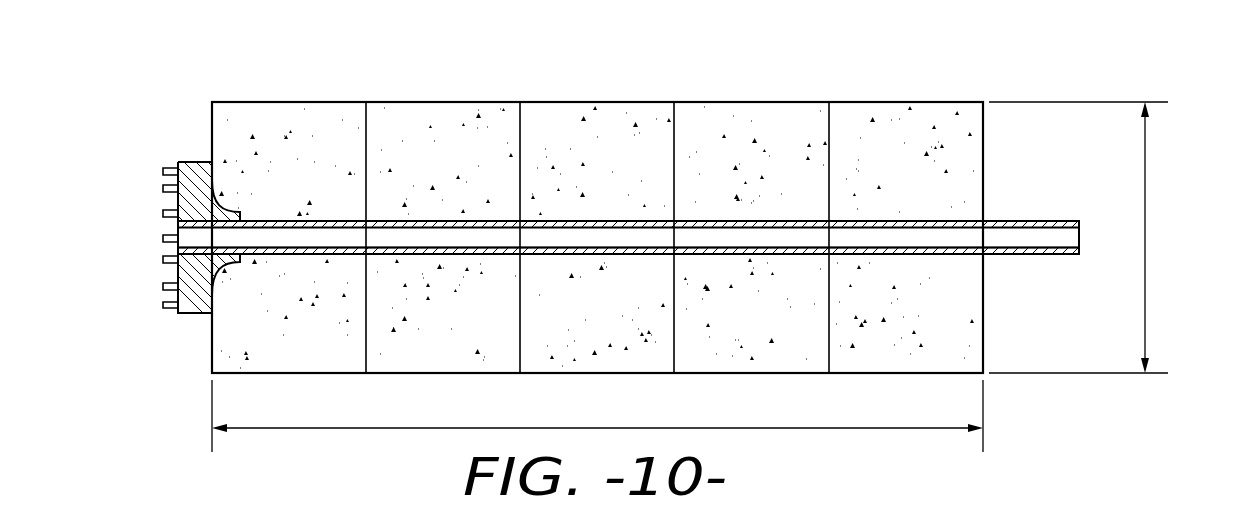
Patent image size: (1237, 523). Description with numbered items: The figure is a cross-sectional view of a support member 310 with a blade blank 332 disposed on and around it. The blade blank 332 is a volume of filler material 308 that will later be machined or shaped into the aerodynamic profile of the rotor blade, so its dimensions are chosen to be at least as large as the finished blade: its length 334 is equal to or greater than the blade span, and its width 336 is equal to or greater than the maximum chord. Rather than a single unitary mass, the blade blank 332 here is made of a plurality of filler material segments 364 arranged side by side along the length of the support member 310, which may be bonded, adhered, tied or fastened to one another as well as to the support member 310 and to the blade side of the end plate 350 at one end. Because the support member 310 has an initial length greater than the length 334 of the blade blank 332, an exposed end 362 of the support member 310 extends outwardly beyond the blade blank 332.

The blade blank 332 is at (242, 98).
The filler material segments 364 is at (903, 102).
The filler material 308 is at (888, 352).
The exposed end 362 is at (1018, 221).
The support member 310 is at (708, 255).
The end plate 350 is at (205, 162).
The width 336 is at (1147, 218).
The length 334 is at (355, 428).